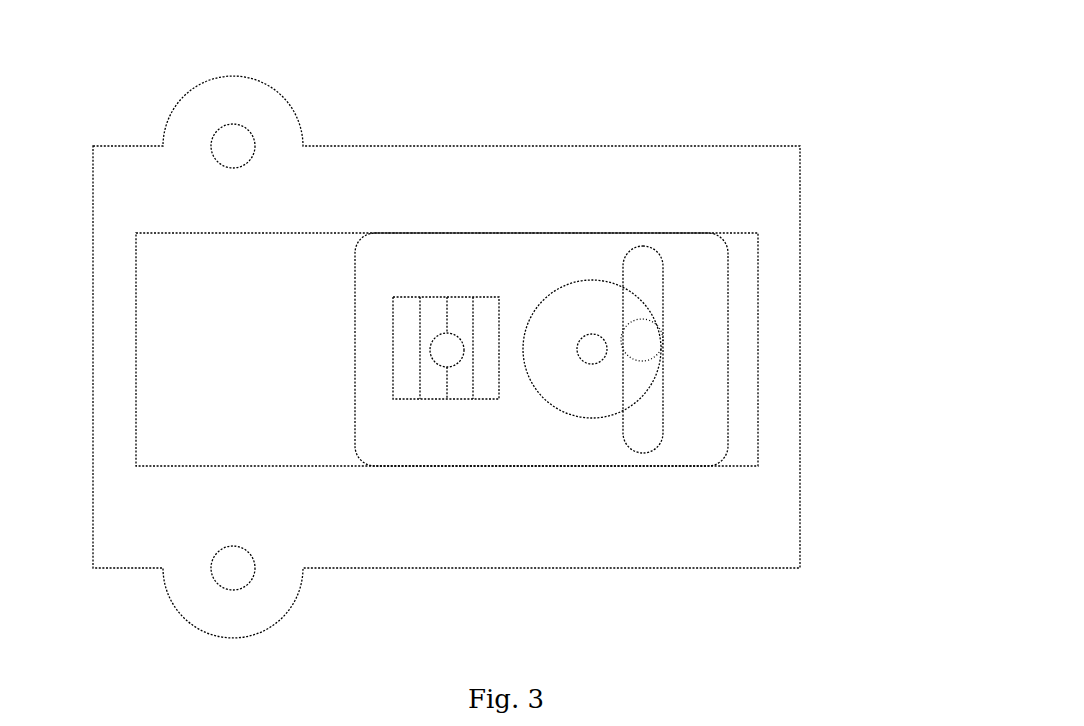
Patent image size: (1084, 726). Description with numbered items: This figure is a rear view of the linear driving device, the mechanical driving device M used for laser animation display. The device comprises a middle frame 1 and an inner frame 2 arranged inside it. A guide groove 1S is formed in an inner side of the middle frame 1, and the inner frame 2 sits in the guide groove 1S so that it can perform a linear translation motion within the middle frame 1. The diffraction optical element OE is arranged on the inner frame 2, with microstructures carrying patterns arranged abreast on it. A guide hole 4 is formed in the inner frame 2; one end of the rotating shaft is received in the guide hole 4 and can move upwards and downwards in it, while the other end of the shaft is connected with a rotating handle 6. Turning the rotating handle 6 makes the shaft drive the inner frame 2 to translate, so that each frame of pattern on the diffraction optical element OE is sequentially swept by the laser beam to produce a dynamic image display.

The middle frame 1 is at (705, 168).
The guide groove 1S is at (260, 277).
The inner frame 2 is at (513, 256).
The diffraction optical element OE is at (435, 401).
The rotating handle 6 is at (550, 383).
The guide hole 4 is at (648, 442).
The mechanical driving device M is at (803, 178).